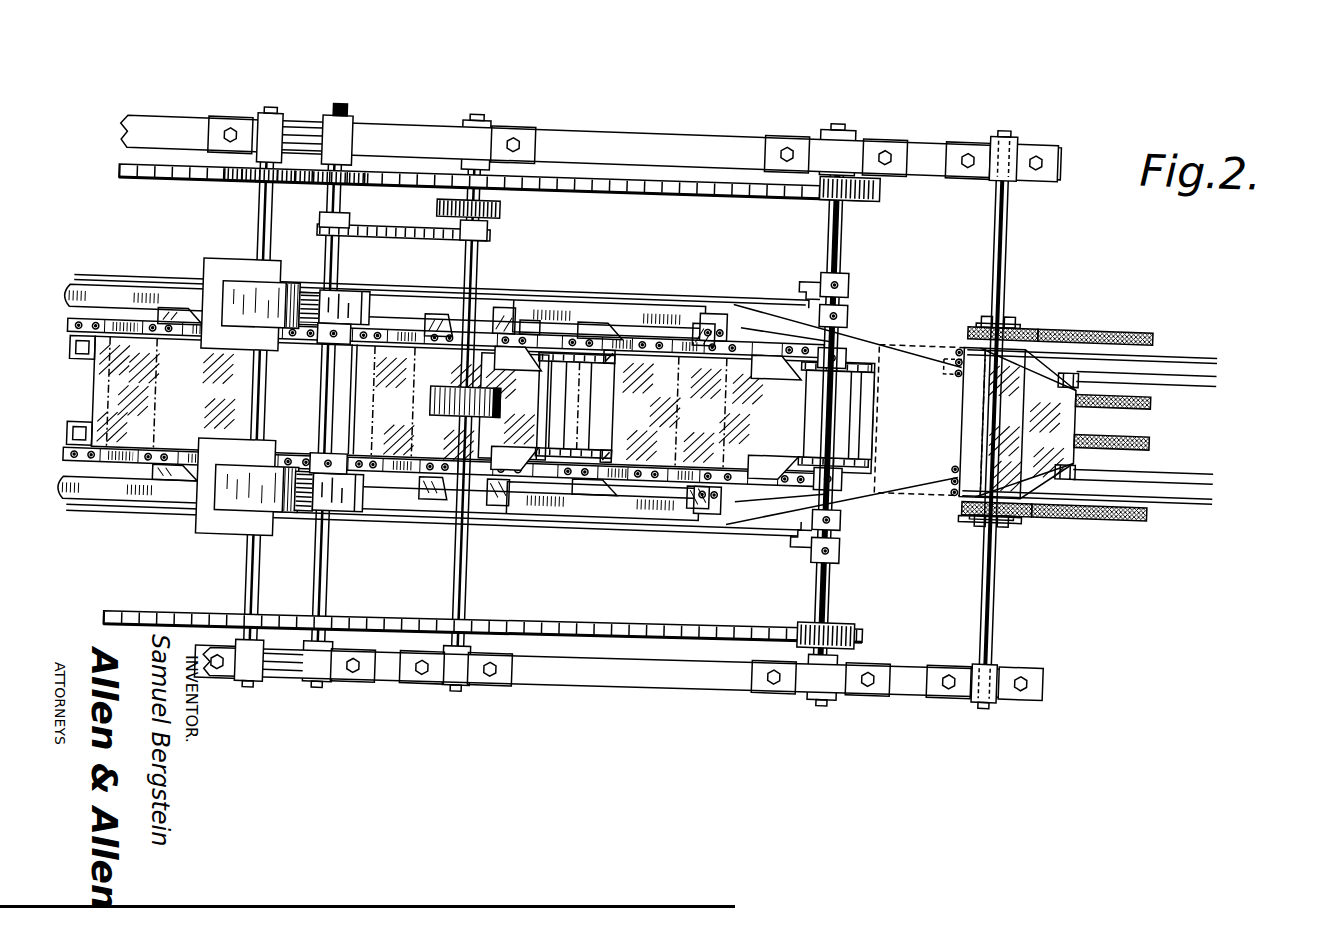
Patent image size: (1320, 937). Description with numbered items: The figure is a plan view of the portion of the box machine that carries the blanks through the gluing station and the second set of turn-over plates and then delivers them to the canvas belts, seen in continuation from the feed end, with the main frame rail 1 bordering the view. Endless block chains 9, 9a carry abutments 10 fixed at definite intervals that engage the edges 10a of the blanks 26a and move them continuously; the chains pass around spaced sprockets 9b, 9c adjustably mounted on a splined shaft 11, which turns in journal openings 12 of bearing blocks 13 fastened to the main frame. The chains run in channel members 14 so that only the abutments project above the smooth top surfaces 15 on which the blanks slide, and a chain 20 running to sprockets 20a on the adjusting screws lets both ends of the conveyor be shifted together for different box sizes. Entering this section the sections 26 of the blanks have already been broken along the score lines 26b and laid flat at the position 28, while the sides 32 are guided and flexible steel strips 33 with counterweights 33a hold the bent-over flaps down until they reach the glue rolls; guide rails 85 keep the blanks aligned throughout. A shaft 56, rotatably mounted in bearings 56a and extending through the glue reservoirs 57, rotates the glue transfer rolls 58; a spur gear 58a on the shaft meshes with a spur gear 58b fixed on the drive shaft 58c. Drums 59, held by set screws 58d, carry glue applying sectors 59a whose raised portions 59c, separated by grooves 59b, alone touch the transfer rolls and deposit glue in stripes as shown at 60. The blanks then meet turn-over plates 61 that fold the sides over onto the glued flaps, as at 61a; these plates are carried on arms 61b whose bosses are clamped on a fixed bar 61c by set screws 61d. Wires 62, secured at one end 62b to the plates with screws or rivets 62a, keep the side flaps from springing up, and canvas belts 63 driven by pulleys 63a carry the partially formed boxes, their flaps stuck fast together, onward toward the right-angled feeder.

The frame rail 1 is at (672, 126).
The endless block chain 9 is at (615, 433).
The endless block chain 9a is at (712, 410).
The spaced sprocket 9b is at (1088, 440).
The spaced sprocket 9c is at (1088, 345).
The abutment 10 is at (103, 330).
The blank edge 10a is at (112, 395).
The splined shaft 11 is at (1011, 572).
The journal opening 12 is at (1012, 118).
The bearing block 13 is at (1058, 128).
The channel member 14 is at (84, 423).
The top surface of channel 15 is at (594, 406).
The chain 20 is at (690, 176).
The sprocket 20a is at (880, 172).
The blank section 26 is at (514, 406).
The blank 26a is at (294, 399).
The score line 26b is at (540, 306).
The turned-down flap position 28 is at (681, 414).
The blank side 32 is at (510, 294).
The flexible steel strip 33 is at (133, 320).
The counterweight 33a is at (188, 306).
The shaft 56 is at (262, 600).
The bearing 56a is at (270, 106).
The glue reservoir 57 is at (268, 256).
The glue transfer roll 58 is at (296, 284).
The spur gear 58a is at (303, 118).
The spur gear 58b is at (356, 134).
The drive shaft 58c is at (352, 206).
The set screw 58d is at (360, 393).
The drum 59 is at (378, 295).
The glue applying sector 59a is at (340, 292).
The groove 59b is at (326, 332).
The raised portion 59c is at (366, 318).
The glue stripe area 60 is at (508, 290).
The turn-over plate 61 is at (915, 318).
The adhered flap position 61a is at (1040, 299).
The arm 61b is at (856, 262).
The fixed bar 61c is at (847, 215).
The set screw 61d is at (856, 291).
The wire 62 is at (1225, 322).
The screw or rivet 62a is at (967, 320).
The wire end 62b is at (1000, 293).
The canvas belt 63 is at (1120, 297).
The pulley 63a is at (1022, 287).
The guide rail 85 is at (656, 277).